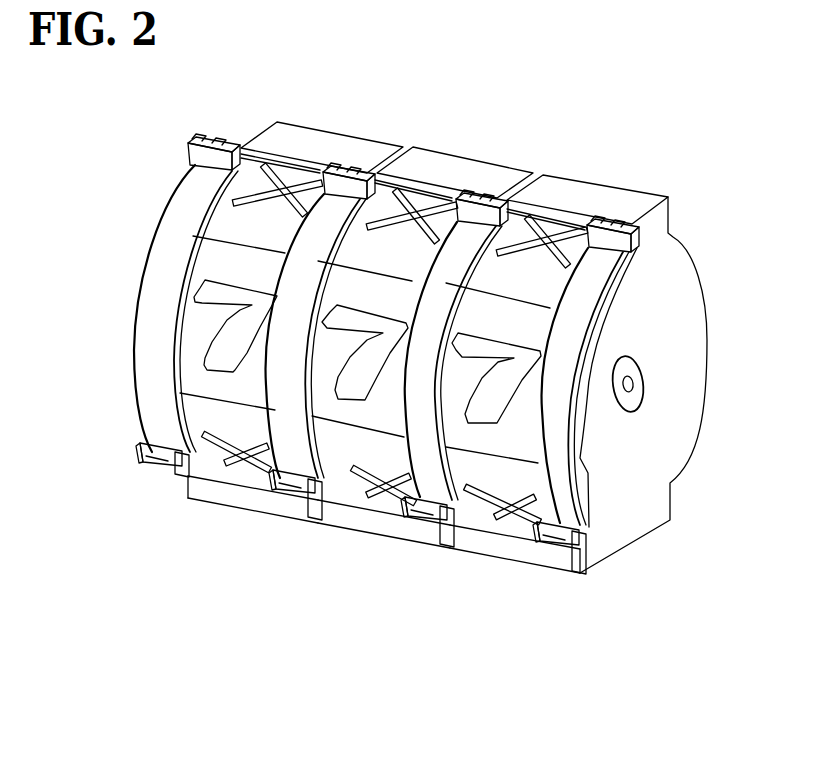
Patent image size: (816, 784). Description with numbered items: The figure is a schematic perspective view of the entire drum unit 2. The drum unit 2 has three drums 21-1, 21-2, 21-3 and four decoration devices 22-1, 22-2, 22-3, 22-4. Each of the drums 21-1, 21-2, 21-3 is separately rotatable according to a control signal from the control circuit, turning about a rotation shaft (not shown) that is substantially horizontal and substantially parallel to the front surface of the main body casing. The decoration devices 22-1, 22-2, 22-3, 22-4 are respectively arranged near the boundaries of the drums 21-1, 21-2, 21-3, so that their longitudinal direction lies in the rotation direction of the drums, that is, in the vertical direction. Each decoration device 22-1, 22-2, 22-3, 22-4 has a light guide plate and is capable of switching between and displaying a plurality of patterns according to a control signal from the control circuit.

The drum unit 2 is at (437, 428).
The drum 21-1 is at (233, 490).
The drum 21-2 is at (365, 512).
The drum 21-3 is at (497, 540).
The decoration device 22-1 is at (176, 476).
The decoration device 22-2 is at (313, 520).
The decoration device 22-3 is at (446, 548).
The decoration device 22-4 is at (577, 550).